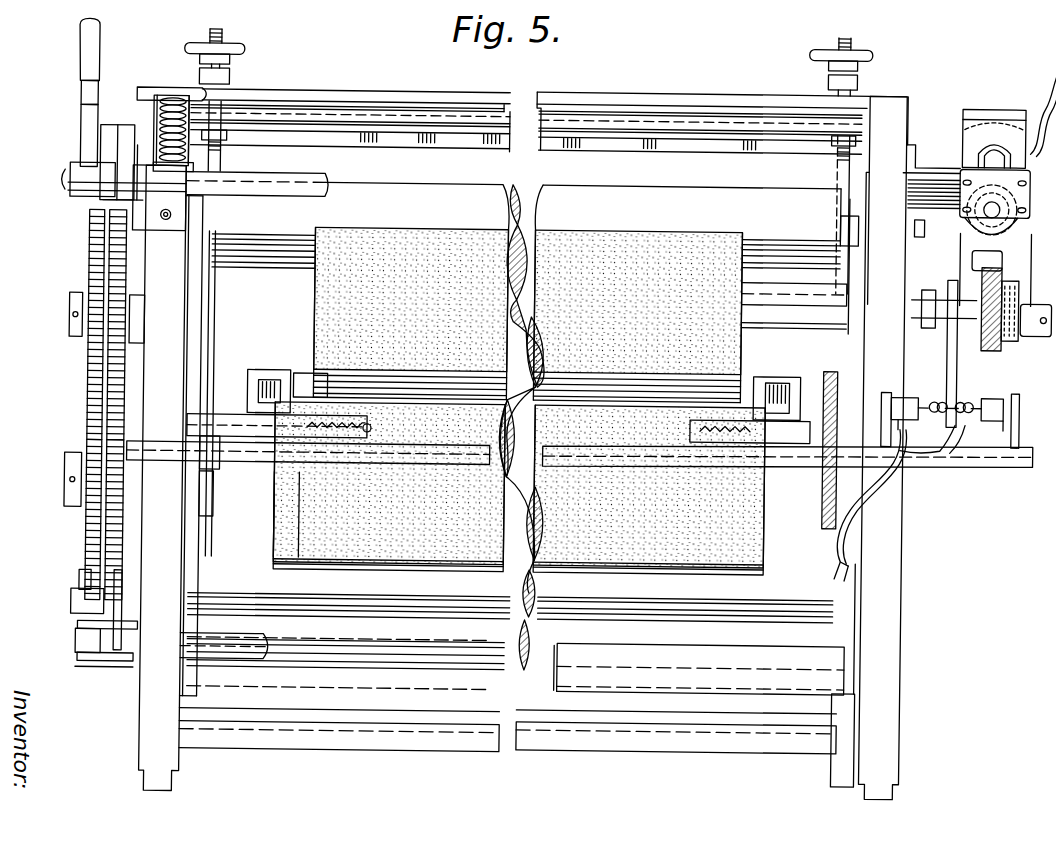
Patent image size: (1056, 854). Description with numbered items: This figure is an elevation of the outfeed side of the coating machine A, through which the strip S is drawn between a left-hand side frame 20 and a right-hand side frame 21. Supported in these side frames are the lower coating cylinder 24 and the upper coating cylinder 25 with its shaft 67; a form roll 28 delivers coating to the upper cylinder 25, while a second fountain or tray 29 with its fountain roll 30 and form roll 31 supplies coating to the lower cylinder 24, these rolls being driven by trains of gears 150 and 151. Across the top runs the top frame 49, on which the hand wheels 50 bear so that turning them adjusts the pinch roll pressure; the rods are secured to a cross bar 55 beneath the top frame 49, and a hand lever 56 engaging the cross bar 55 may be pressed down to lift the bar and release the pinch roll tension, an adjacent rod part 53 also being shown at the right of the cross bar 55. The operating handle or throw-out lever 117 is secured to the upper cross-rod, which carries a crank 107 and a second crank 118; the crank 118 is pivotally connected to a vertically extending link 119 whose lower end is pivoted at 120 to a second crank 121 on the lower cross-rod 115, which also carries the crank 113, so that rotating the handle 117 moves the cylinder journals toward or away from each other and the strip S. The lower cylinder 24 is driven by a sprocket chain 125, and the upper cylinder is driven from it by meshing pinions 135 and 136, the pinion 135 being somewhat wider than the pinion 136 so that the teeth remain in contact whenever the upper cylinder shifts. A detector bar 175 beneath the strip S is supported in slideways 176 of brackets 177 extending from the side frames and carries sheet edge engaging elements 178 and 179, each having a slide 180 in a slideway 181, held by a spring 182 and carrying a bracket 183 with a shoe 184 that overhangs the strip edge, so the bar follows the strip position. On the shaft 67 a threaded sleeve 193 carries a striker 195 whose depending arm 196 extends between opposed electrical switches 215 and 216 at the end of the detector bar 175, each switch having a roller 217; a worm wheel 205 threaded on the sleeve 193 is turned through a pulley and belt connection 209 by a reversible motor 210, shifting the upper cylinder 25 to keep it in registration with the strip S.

The side frame 20 is at (880, 698).
The side frame 21 is at (153, 704).
The lower coating cylinder 24 is at (390, 568).
The upper coating cylinder 25 is at (428, 235).
The form roll 28 is at (648, 195).
The second fountain 29 is at (640, 688).
The fountain roll 30 is at (502, 645).
The form roll 31 is at (556, 595).
The top plate 49 is at (430, 99).
The adjusting wheel 50 is at (230, 58).
The adjusting screw 53 is at (834, 150).
The cross bar 55 is at (670, 137).
The hand lever 56 is at (822, 52).
The upper cylinder shaft 67 is at (796, 310).
The crank 107 is at (97, 203).
The crank 113 is at (120, 658).
The cross-rod 115 is at (218, 660).
The operating handle 117 is at (76, 76).
The second crank 118 is at (118, 152).
The link 119 is at (130, 208).
The pivot connection 120 is at (73, 604).
The second crank 121 is at (80, 631).
The sprocket chain 125 is at (860, 555).
The pinion 135 is at (87, 260).
The pinion 136 is at (87, 518).
The train of gears 150 is at (66, 186).
The train of gears 151 is at (81, 645).
The detector bar 175 is at (652, 462).
The slideways 176 is at (235, 480).
The brackets 177 is at (200, 450).
The sheet edge engaging element 178 is at (252, 370).
The sheet edge engaging element 179 is at (768, 375).
The slide 180 is at (305, 415).
The slideway 181 is at (302, 515).
The spring 182 is at (355, 440).
The bracket 183 is at (272, 380).
The shoe 184 is at (300, 385).
The threaded sleeve 193 is at (1018, 319).
The striker 195 is at (958, 297).
The arm 196 is at (955, 404).
The worm wheel 205 is at (970, 258).
The pulley and belt connection 209 is at (958, 210).
The reversible motor 210 is at (986, 108).
The electrical switch 215 is at (925, 450).
The electrical switch 216 is at (998, 395).
The roller 217 is at (940, 382).
The strip S is at (620, 385).
The coating machine A is at (906, 650).